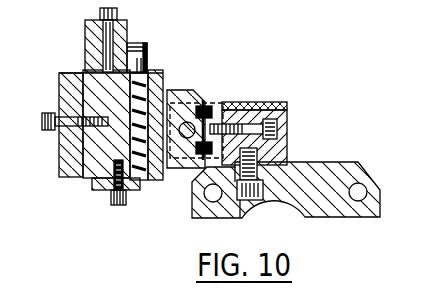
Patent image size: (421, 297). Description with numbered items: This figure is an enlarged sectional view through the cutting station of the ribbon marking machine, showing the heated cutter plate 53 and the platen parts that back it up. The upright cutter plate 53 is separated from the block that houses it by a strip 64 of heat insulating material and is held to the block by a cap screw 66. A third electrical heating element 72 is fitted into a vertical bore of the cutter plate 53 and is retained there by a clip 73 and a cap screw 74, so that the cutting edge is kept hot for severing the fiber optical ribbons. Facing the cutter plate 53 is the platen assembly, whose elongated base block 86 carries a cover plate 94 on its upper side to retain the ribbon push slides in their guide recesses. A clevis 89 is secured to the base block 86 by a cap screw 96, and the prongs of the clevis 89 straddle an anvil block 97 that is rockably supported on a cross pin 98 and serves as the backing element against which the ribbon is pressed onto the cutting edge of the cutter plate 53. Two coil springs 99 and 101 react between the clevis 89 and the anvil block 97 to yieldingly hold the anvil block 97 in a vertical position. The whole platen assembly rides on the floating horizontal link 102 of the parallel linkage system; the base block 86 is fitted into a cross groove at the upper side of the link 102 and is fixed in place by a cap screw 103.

The cutter plate 53 is at (157, 70).
The strip of heat insulating material 64 is at (88, 76).
The cap screw 66 is at (48, 115).
The third electrical heating element 72 is at (151, 88).
The clip 73 is at (108, 181).
The cap screw 74 is at (118, 206).
The base block 86 is at (287, 108).
The clevis 89 is at (211, 104).
The cover plate 94 is at (254, 102).
The cap screw 96 is at (285, 129).
The anvil block 97 is at (181, 92).
The cross pin 98 is at (200, 148).
The coil spring 99 is at (238, 102).
The coil spring 101 is at (200, 160).
The floating horizontal link 102 is at (320, 166).
The cap screw 103 is at (251, 200).